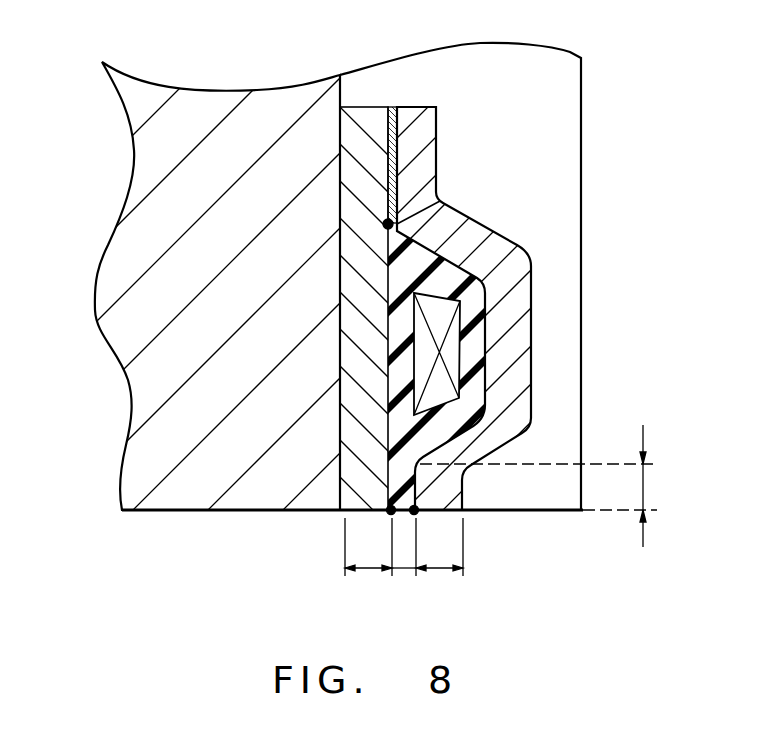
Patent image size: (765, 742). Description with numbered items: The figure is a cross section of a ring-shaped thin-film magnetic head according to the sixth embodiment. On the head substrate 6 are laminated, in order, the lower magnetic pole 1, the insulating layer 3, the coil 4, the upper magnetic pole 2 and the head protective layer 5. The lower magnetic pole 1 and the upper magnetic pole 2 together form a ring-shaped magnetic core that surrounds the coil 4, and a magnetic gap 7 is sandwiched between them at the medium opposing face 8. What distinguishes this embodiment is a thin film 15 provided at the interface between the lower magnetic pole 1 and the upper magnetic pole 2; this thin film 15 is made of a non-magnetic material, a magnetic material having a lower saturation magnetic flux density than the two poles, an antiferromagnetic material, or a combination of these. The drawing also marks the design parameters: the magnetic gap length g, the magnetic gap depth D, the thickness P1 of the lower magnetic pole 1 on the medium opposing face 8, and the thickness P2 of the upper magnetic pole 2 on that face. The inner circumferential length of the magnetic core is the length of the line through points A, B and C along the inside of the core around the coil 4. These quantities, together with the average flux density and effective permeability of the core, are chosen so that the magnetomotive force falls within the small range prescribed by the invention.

The lower magnetic pole 1 is at (365, 122).
The upper magnetic pole 2 is at (490, 243).
The insulating layer 3 is at (476, 397).
The coil 4 is at (450, 353).
The head protective layer 5 is at (563, 148).
The head substrate 6 is at (150, 163).
The magnetic gap 7 is at (402, 512).
The medium opposing face 8 is at (530, 490).
The thin film 15 is at (393, 106).
The point A of inner circumferential line A is at (391, 511).
The point B of inner circumferential line B is at (438, 201).
The point C of inner circumferential line C is at (413, 511).
The magnetic gap depth D is at (543, 486).
The magnetic gap length g is at (404, 586).
The thickness of the lower magnetic pole P1 is at (368, 565).
The thickness of the upper magnetic pole P2 is at (439, 565).